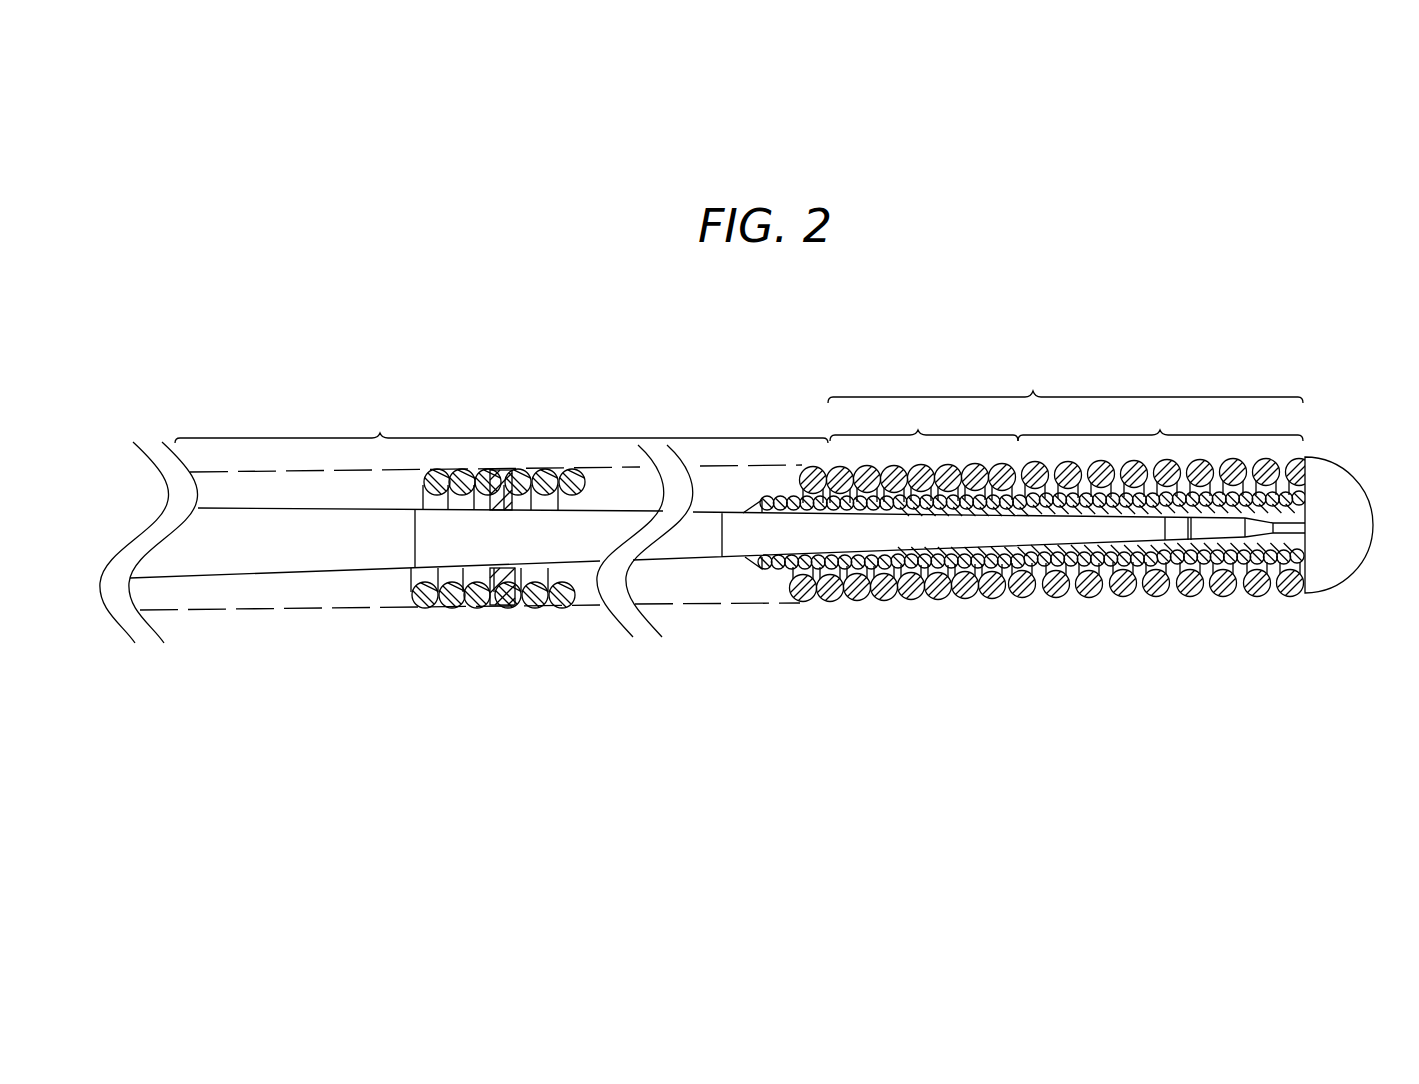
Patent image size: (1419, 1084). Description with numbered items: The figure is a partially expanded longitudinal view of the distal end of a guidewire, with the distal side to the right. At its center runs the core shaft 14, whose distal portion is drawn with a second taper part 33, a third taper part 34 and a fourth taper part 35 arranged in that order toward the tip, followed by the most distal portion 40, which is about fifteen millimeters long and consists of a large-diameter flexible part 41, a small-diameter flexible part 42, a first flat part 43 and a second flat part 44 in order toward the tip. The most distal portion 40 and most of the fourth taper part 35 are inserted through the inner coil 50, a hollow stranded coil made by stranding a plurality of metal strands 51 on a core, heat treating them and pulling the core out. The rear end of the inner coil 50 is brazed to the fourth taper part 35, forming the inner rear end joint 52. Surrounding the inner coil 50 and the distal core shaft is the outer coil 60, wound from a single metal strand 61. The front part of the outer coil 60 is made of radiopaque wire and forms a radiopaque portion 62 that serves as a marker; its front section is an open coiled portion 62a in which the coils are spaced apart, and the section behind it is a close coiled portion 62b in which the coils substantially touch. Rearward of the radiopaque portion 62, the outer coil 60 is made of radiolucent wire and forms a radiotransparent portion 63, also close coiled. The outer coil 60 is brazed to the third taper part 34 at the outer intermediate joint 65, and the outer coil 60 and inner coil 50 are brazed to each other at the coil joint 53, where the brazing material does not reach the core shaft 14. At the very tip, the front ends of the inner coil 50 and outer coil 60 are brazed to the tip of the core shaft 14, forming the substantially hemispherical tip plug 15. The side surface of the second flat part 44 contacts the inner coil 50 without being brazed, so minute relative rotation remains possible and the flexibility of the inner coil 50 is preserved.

The core shaft 14 is at (205, 553).
The tip plug 15 is at (1337, 517).
The second taper part 33 is at (313, 555).
The third taper part 34 is at (567, 550).
The fourth taper part 35 is at (778, 538).
The most distal portion 40 is at (1271, 626).
The large-diameter flexible part 41 is at (1177, 532).
The small-diameter flexible part 42 is at (1227, 532).
The first flat part 43 is at (1253, 530).
The second flat part 44 is at (1324, 608).
The inner coil 50 is at (1024, 604).
The metal strands 51 is at (843, 563).
The inner rear end joint 52 is at (753, 563).
The coil joint 53 is at (920, 572).
The outer coil 60 is at (862, 530).
The metal strand 61 is at (428, 605).
The radiopaque portion 62 is at (1051, 479).
The open coiled portion 62a is at (1161, 498).
The close coiled portion 62b is at (904, 500).
The radiotransparent portion 63 is at (484, 595).
The outer intermediate joint 65 is at (500, 468).